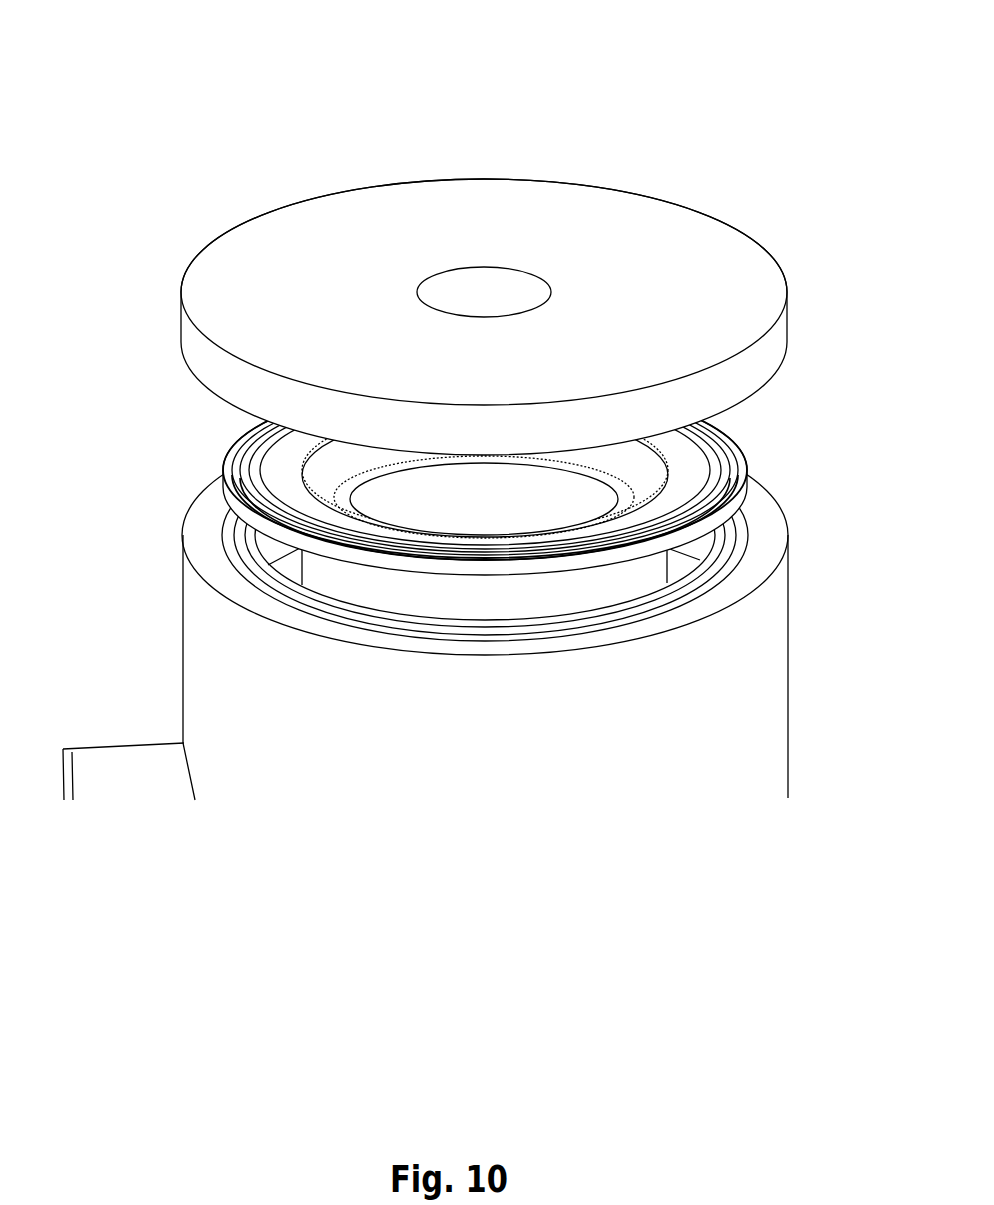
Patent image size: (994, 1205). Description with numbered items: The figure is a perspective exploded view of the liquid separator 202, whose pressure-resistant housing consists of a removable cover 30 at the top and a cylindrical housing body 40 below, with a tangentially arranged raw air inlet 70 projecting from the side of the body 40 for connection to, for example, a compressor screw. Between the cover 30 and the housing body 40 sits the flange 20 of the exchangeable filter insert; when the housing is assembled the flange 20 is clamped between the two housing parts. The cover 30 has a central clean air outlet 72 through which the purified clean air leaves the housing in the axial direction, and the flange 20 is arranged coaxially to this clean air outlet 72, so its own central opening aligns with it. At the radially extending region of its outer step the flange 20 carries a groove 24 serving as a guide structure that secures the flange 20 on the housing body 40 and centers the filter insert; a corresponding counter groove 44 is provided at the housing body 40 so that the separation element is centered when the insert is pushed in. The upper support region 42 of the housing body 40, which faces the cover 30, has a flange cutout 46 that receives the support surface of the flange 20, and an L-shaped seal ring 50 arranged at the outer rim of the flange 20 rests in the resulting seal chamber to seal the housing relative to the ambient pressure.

The liquid separator 202 is at (722, 86).
The cover 30 is at (674, 306).
The clean air outlet 72 is at (487, 301).
The flange 20 is at (533, 478).
The groove 24 is at (718, 459).
The seal ring 50 is at (747, 478).
The support region 42 is at (559, 535).
The flange cutout 46 is at (735, 552).
The counter groove 44 is at (675, 583).
The housing body 40 is at (489, 746).
The raw air inlet 70 is at (137, 780).